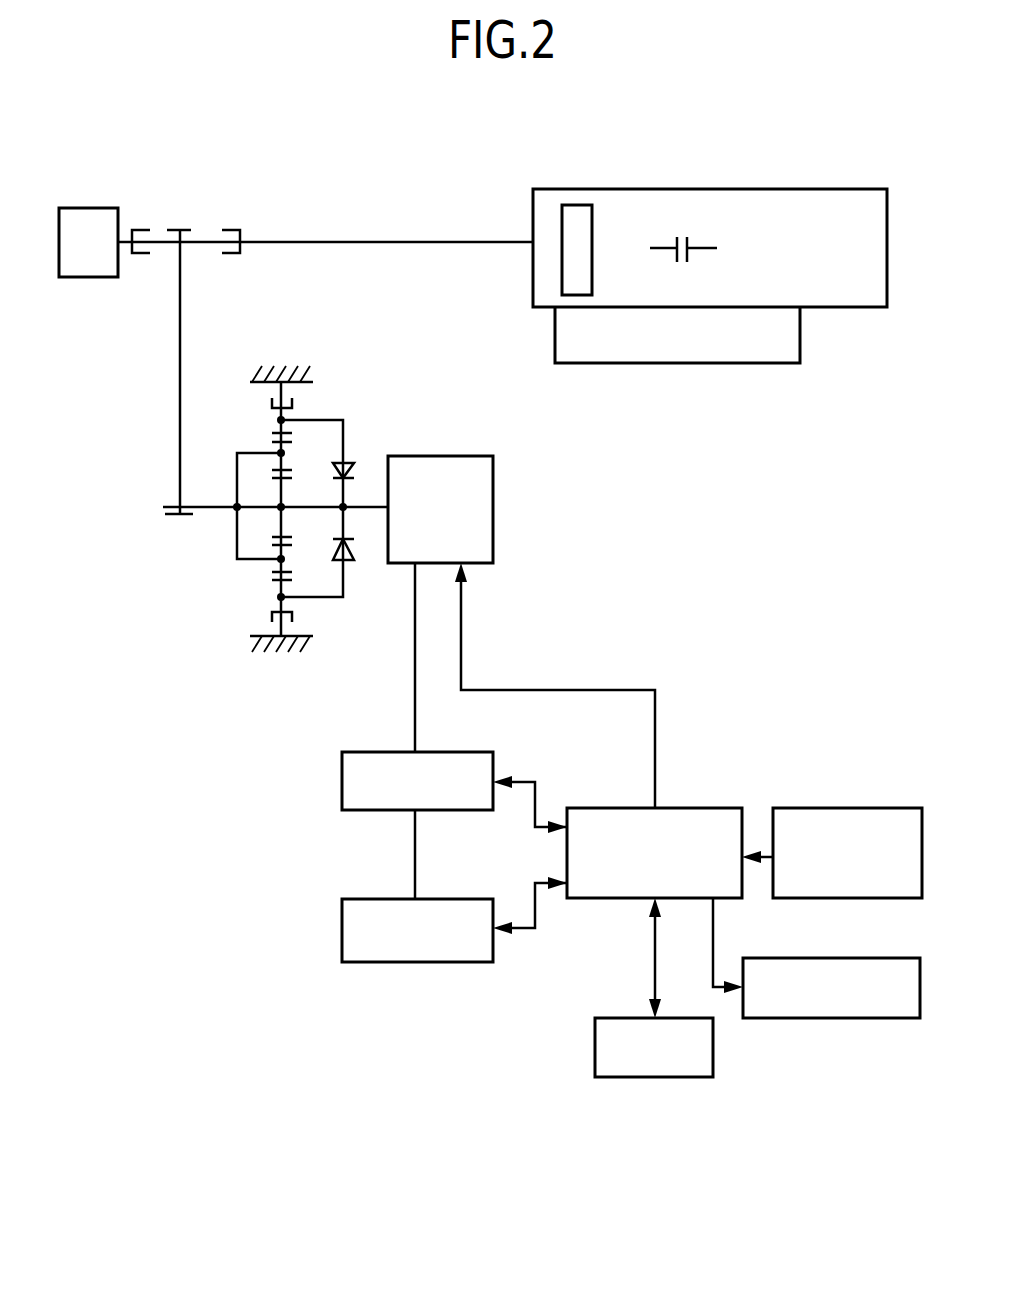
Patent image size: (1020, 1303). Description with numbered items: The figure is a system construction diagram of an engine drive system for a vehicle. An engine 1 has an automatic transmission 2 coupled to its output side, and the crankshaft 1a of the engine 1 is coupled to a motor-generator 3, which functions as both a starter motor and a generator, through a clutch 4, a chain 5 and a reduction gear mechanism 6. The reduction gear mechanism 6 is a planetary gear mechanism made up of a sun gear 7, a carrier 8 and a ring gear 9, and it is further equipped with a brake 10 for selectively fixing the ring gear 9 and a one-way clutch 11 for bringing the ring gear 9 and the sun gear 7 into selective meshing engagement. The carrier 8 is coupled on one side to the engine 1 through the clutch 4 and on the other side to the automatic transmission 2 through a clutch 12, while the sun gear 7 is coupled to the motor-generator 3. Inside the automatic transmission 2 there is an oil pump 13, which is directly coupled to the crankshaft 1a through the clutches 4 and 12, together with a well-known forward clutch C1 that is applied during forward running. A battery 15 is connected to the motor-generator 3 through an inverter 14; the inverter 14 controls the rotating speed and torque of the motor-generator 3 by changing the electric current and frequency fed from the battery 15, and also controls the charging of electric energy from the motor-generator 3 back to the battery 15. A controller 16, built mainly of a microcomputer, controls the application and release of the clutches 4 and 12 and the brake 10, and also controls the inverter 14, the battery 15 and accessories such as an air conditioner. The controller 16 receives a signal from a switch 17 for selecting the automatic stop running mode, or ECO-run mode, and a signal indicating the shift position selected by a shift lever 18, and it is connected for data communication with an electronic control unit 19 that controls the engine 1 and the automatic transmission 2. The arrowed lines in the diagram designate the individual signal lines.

The engine 1 is at (90, 208).
The crankshaft 1a is at (126, 241).
The automatic transmission 2 is at (786, 189).
The motor-generator 3 is at (442, 456).
The clutch 4 is at (145, 253).
The chain 5 is at (180, 407).
The reduction gear mechanism 6 is at (232, 549).
The sun gear 7 is at (283, 482).
The carrier 8 is at (256, 563).
The ring gear 9 is at (288, 590).
The brake 10 is at (270, 614).
The one-way clutch 11 is at (347, 463).
The clutch 12 is at (233, 252).
The oil pump 13 is at (574, 205).
The forward clutch C1 is at (675, 241).
The inverter 14 is at (342, 782).
The battery 15 is at (342, 930).
The controller 16 is at (690, 812).
The switch 17 is at (843, 808).
The shift lever 18 is at (830, 1018).
The electronic control unit (ECU) 19 is at (648, 1077).